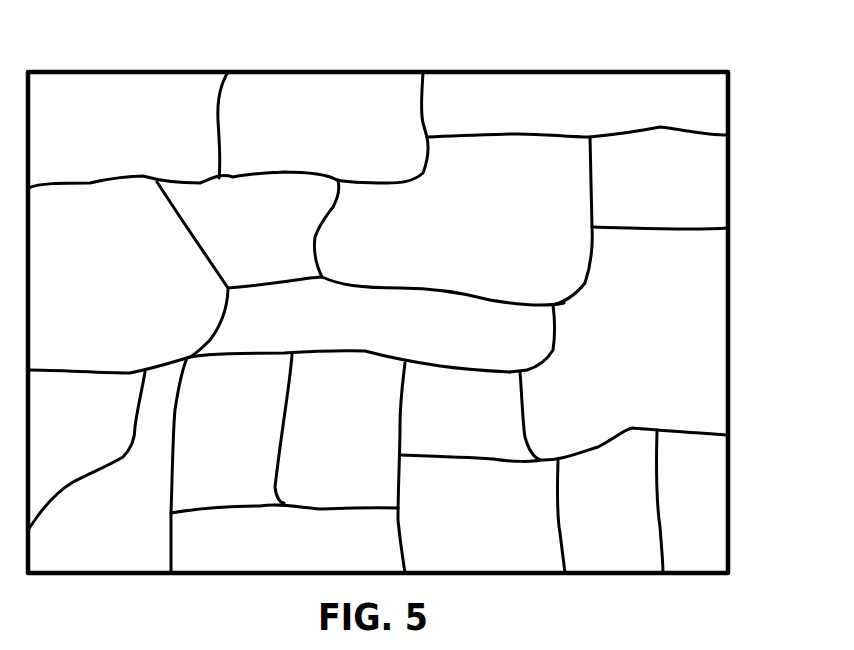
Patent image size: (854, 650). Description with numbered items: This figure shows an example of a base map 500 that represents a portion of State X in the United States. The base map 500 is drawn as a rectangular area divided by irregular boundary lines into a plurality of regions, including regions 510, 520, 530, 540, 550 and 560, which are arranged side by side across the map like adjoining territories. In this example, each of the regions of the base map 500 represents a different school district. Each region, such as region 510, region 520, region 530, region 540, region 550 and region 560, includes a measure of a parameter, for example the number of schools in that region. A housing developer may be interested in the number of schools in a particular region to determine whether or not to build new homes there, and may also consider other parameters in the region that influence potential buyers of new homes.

The base map 500 is at (730, 272).
The region 510 is at (437, 160).
The region 520 is at (648, 357).
The region 530 is at (473, 422).
The region 540 is at (680, 178).
The region 550 is at (315, 192).
The region 560 is at (467, 527).